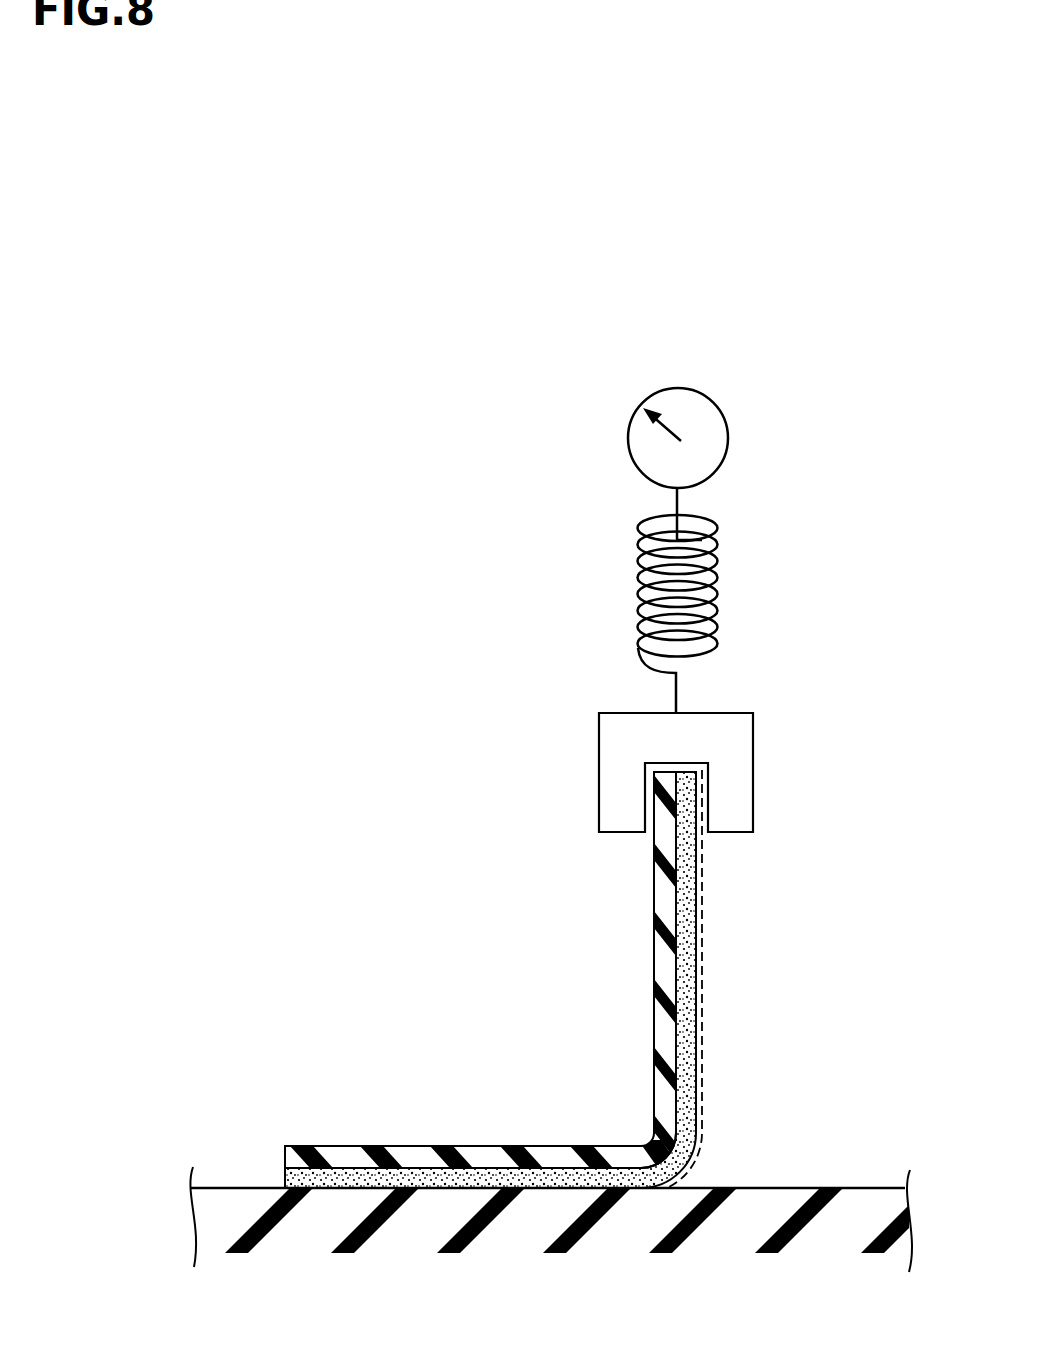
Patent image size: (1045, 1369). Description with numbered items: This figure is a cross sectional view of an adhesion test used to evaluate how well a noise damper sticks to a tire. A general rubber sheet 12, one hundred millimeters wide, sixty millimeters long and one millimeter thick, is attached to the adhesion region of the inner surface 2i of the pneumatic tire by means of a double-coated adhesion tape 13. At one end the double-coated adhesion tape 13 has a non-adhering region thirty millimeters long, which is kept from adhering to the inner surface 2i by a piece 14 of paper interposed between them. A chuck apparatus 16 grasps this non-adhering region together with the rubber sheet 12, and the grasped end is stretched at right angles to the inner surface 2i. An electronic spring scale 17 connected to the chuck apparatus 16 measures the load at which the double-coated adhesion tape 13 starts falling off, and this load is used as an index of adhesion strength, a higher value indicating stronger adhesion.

The electronic spring scale 17 is at (618, 420).
The chuck apparatus 16 is at (610, 773).
The piece of paper 14 is at (705, 962).
The rubber sheet 12 is at (468, 1157).
The double-coated adhesion tape 13 is at (544, 1182).
The inner surface 2i is at (861, 1188).